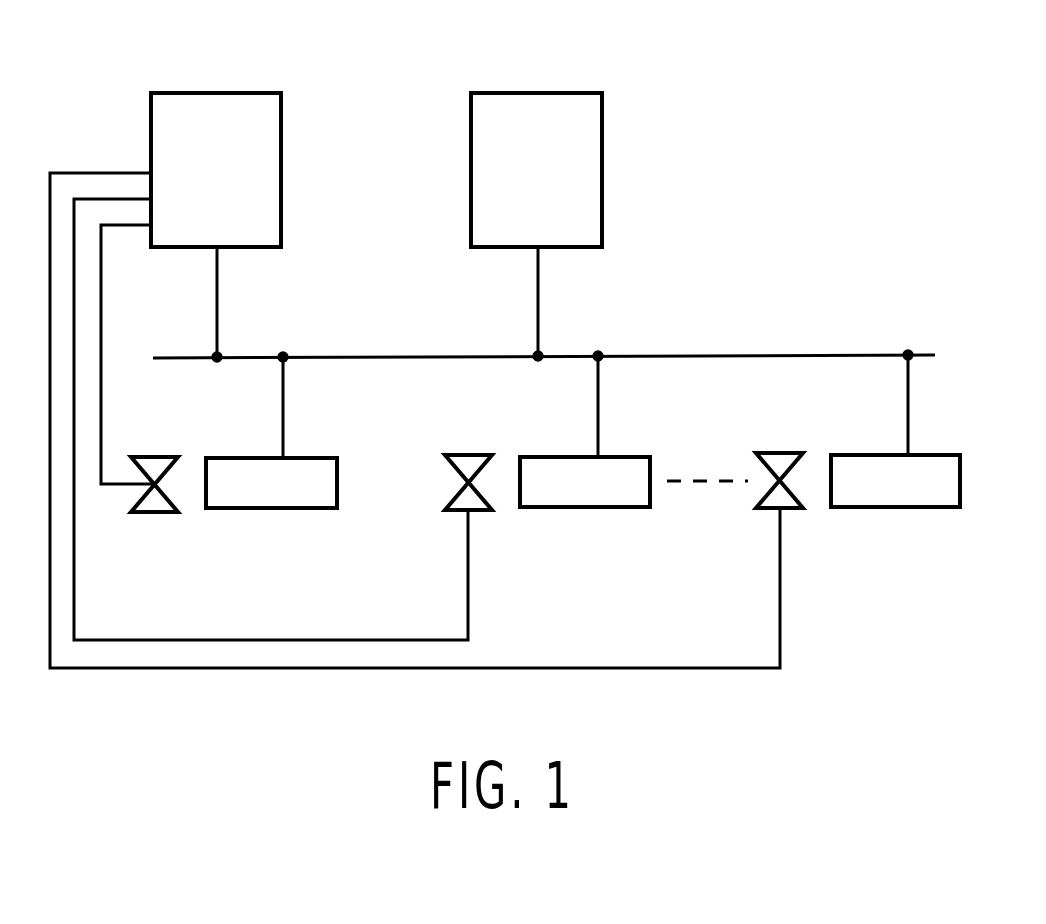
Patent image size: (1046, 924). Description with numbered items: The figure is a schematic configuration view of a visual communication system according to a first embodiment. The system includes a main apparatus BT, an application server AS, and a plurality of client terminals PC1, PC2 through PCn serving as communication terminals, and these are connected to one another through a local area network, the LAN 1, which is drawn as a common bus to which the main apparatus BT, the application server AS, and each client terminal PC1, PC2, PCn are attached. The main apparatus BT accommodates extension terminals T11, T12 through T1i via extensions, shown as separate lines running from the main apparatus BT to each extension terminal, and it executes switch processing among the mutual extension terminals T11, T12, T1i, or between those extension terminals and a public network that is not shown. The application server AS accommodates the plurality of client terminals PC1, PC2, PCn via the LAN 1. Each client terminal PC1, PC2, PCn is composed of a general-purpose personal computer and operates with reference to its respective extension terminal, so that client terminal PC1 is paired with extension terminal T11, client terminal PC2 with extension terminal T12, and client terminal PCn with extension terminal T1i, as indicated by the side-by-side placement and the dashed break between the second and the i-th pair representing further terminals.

The main apparatus BT is at (222, 93).
The application server AS is at (530, 93).
The local area network LAN 1 is at (848, 355).
The extension terminal T11 is at (155, 515).
The client terminal PC1 is at (296, 508).
The extension terminal T12 is at (482, 512).
The client terminal PC2 is at (610, 507).
The extension terminal T1i is at (793, 512).
The client terminal PCn is at (918, 507).